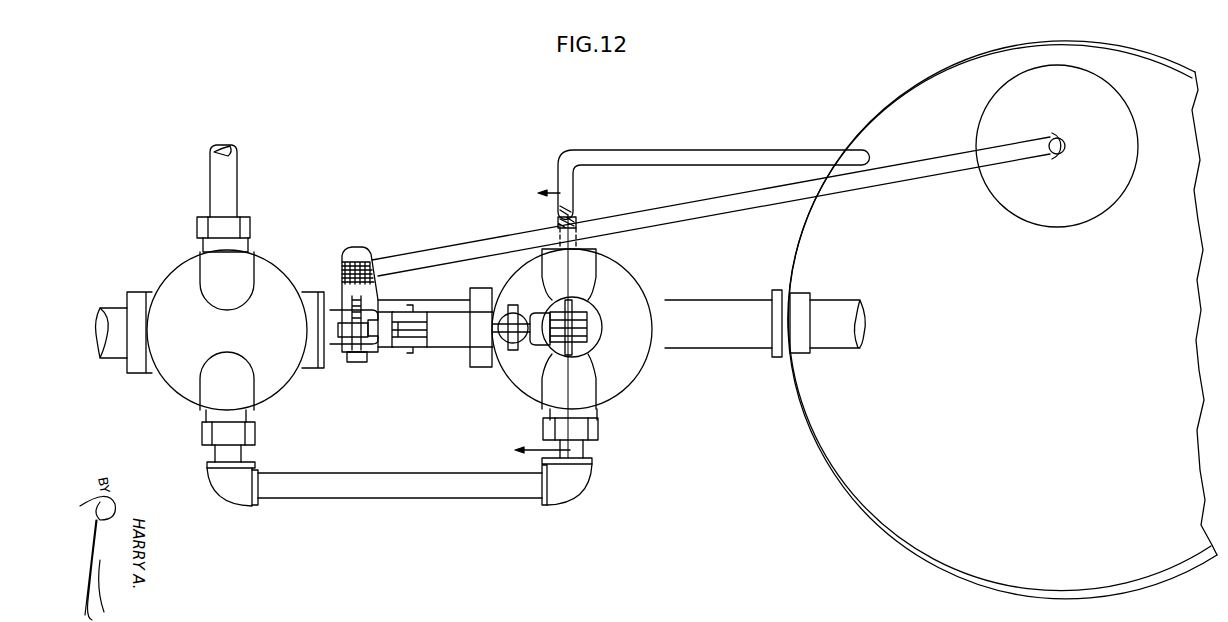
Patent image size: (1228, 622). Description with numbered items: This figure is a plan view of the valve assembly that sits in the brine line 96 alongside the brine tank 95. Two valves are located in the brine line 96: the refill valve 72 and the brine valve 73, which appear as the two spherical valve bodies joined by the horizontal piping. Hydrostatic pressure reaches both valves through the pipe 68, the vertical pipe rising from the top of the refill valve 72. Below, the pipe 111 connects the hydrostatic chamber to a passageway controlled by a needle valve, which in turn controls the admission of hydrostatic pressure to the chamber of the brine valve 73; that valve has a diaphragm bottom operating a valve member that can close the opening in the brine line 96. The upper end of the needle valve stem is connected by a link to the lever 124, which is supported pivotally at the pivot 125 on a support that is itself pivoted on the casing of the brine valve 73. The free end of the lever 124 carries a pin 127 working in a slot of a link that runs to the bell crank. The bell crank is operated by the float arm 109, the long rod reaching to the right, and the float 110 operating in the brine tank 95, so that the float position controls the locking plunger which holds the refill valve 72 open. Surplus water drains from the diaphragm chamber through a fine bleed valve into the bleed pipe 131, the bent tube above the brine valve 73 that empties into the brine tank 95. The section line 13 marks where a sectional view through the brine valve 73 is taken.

The section line 13- 13 is at (531, 322).
The pipe 68 is at (233, 172).
The refill valve 72 is at (177, 274).
The brine valve 73 is at (612, 372).
The brine tank 95 is at (874, 106).
The brine line 96 is at (112, 310).
The float arm 109 is at (441, 252).
The float 110 is at (996, 110).
The pipe 111 is at (315, 494).
The lever 124 is at (445, 344).
The pivot 125 is at (512, 350).
The pin 127 is at (412, 350).
The bleed pipe 131 is at (675, 158).